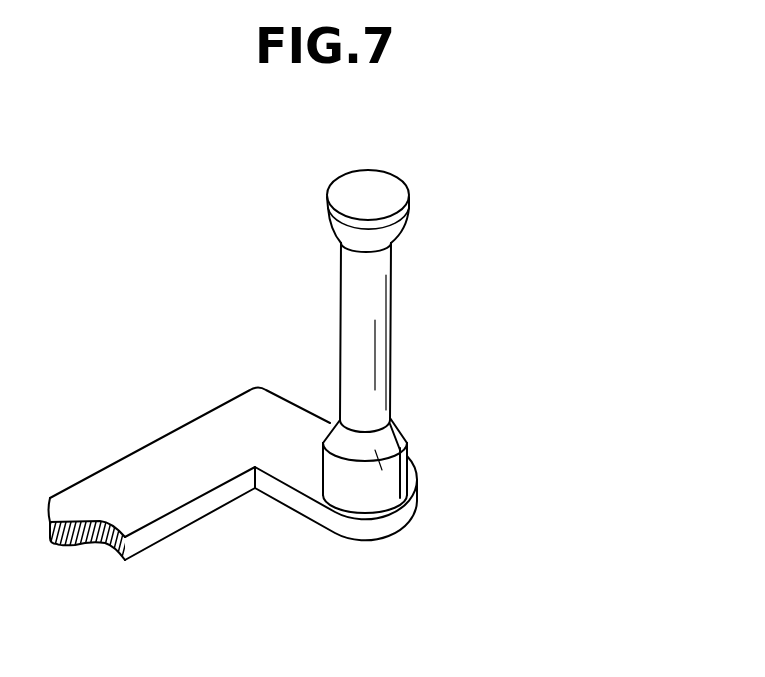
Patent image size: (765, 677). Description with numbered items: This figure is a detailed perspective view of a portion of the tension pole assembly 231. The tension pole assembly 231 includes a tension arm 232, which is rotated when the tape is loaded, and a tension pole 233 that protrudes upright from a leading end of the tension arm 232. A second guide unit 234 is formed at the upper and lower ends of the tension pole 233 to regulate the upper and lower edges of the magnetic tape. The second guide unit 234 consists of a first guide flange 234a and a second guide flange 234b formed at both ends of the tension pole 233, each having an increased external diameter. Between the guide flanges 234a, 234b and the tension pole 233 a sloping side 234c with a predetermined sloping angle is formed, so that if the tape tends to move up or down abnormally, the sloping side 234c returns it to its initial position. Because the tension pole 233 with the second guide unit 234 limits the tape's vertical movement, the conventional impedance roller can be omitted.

The tension pole assembly 231 is at (478, 156).
The tension arm 232 is at (175, 482).
The tension pole 233 is at (386, 340).
The second guide unit 234 is at (123, 199).
The first guide flange 234a is at (327, 210).
The second guide flange 234b is at (328, 472).
The sloping side 234c is at (388, 441).